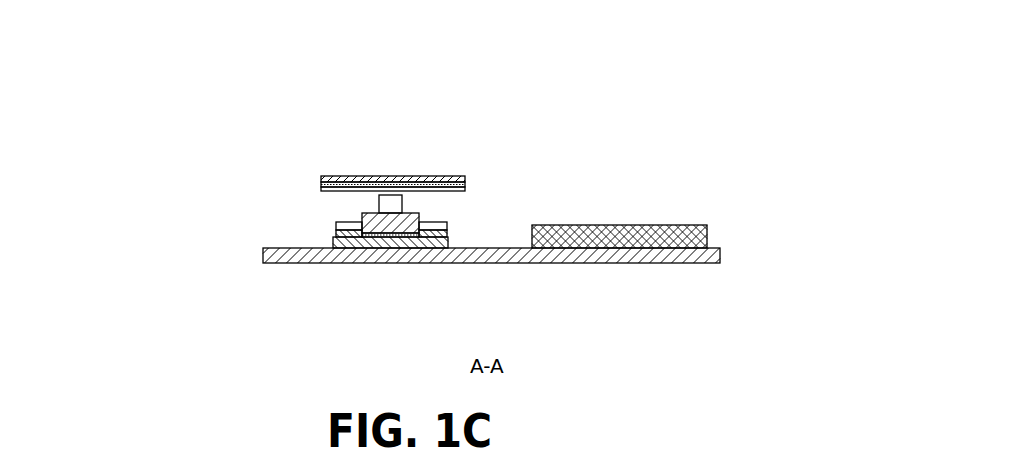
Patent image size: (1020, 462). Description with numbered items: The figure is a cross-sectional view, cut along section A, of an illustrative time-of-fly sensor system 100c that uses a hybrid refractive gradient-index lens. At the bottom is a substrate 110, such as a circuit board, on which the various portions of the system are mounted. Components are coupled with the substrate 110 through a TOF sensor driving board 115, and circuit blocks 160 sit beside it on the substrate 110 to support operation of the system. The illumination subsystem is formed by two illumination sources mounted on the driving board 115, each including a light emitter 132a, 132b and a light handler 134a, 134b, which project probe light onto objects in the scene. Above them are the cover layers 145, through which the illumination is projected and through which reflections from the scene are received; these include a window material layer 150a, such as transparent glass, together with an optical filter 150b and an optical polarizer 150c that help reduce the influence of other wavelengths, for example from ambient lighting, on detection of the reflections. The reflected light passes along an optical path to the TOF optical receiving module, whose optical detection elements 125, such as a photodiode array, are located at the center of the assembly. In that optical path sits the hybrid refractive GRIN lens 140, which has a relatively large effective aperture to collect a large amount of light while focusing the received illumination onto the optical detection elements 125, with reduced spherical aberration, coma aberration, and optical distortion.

The time-of-fly sensor system 100c is at (603, 108).
The substrate 110 is at (563, 257).
The TOF sensor driving board 115 is at (398, 240).
The optical detection elements 125 is at (384, 236).
The light emitter 132a is at (336, 233).
The light emitter 132b is at (447, 233).
The light handler 134a is at (336, 225).
The light handler 134b is at (447, 225).
The hybrid refractive GRIN lens 140 is at (389, 205).
The cover layers 145 is at (316, 191).
The window material layer 150a is at (465, 179).
The optical filter 150b is at (465, 184).
The optical polarizer 150c is at (465, 189).
The circuit blocks 160 is at (647, 238).